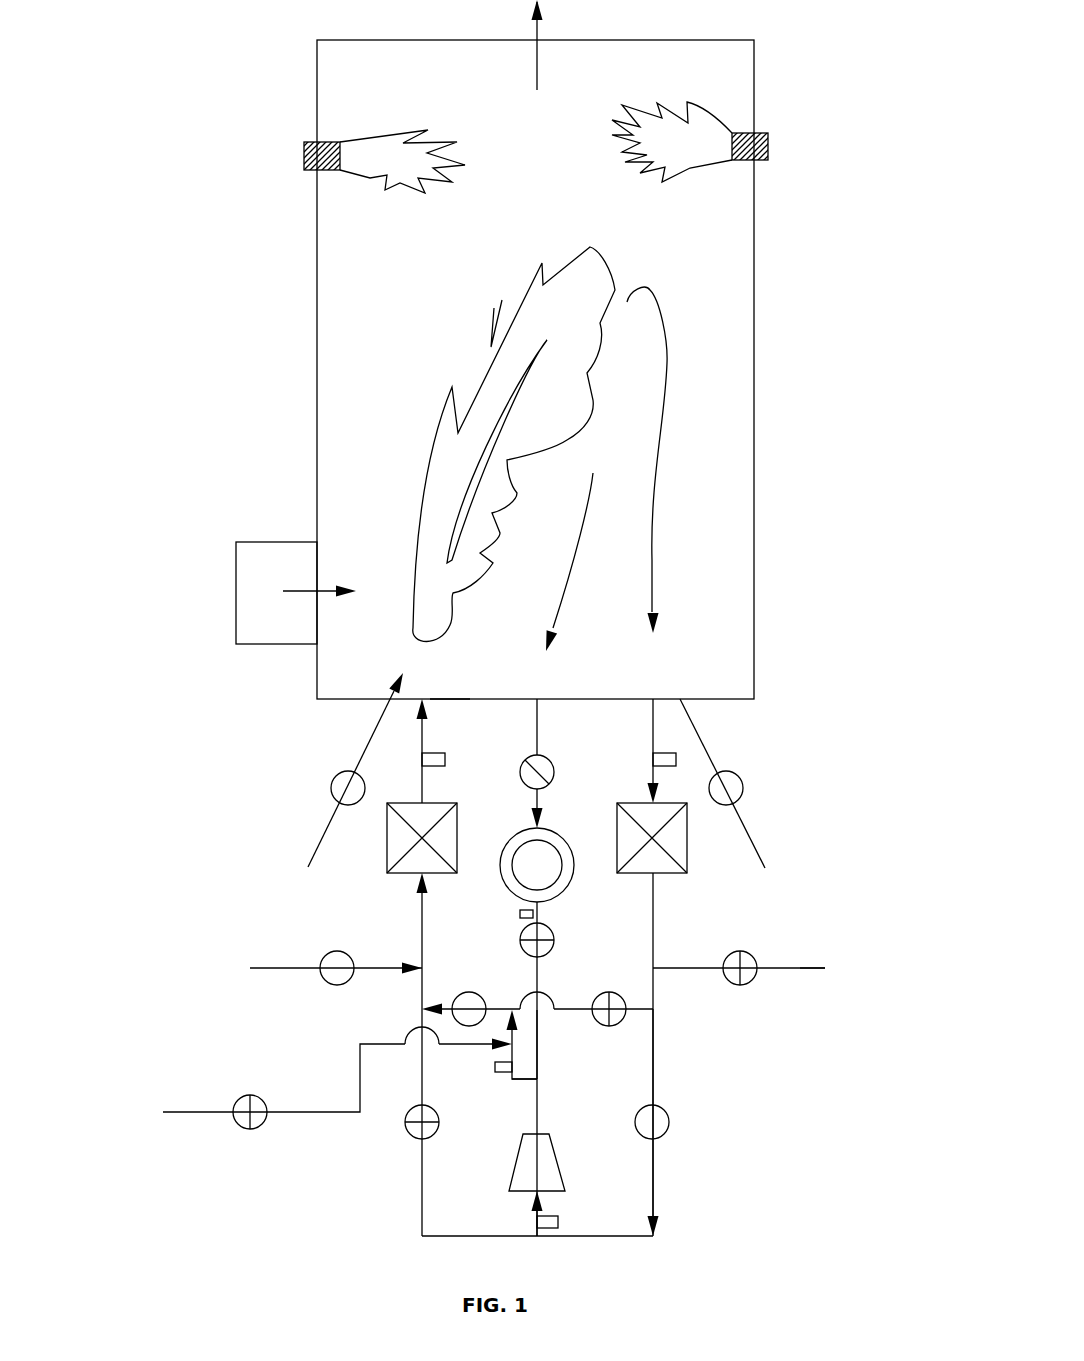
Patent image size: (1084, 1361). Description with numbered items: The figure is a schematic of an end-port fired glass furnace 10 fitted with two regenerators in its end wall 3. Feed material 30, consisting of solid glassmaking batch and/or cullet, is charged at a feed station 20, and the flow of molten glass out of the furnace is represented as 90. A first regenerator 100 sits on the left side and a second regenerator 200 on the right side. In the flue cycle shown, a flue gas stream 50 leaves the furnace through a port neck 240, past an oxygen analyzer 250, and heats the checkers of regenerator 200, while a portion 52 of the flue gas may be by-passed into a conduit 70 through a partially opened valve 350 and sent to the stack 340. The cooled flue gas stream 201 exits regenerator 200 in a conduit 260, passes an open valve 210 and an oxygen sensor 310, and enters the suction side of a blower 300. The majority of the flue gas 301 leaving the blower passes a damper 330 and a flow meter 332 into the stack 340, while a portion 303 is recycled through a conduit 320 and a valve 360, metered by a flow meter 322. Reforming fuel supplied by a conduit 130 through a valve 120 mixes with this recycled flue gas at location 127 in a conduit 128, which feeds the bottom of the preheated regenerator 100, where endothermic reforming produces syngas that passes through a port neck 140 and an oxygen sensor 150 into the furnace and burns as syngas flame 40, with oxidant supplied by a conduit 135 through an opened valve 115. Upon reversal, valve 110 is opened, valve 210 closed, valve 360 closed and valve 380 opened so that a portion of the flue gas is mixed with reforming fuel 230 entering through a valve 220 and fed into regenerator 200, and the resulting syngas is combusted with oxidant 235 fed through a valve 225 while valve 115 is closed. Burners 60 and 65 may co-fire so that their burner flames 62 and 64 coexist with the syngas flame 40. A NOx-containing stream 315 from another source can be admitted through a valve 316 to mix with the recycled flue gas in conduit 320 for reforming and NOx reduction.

The end wall 3 is at (455, 698).
The glass furnace 10 is at (754, 333).
The feed station 20 is at (277, 541).
The feed material 30 is at (323, 590).
The syngas flame 40 is at (425, 371).
The flue gas stream 50 is at (655, 455).
The by-passed flue gas portion 52 is at (582, 595).
The burner 60 is at (305, 145).
The burner flame 62 is at (362, 175).
The burner flame 64 is at (620, 153).
The burner 65 is at (762, 133).
The conduit 70 is at (537, 716).
The molten glass flow 90 is at (553, 45).
The first regenerator 100 is at (387, 872).
The valve 110 is at (405, 1125).
The valve 115 is at (335, 777).
The valve 120 is at (330, 985).
The mixing location 127 is at (428, 960).
The conduit 128 is at (415, 900).
The reforming fuel conduit 130 is at (265, 968).
The oxidant conduit 135 is at (322, 842).
The port neck 140 is at (431, 745).
The oxygen sensor 150 is at (445, 757).
The second regenerator 200 is at (687, 855).
The cooled flue gas stream 201 is at (653, 930).
The valve 210 is at (670, 1122).
The valve 220 is at (742, 985).
The valve 225 is at (743, 788).
The reforming fuel 230 is at (825, 968).
The oxidant 235 is at (767, 845).
The port neck 240 is at (653, 723).
The oxygen analyzer 250 is at (676, 758).
The conduit 260 is at (653, 1060).
The blower 300 is at (565, 1175).
The flue gas 301 is at (543, 1038).
The recycled flue gas portion 303 is at (525, 1068).
The oxygen sensor 310 is at (558, 1222).
The NOx-containing stream 315 is at (207, 1111).
The valve 316 is at (250, 1130).
The conduit 320 is at (475, 1108).
The flow meter 322 is at (492, 1066).
The damper 330 is at (554, 938).
The flow meter 332 is at (520, 913).
The stack 340 is at (575, 872).
The valve 350 is at (554, 773).
The valve 360 is at (469, 992).
The valve 380 is at (590, 992).